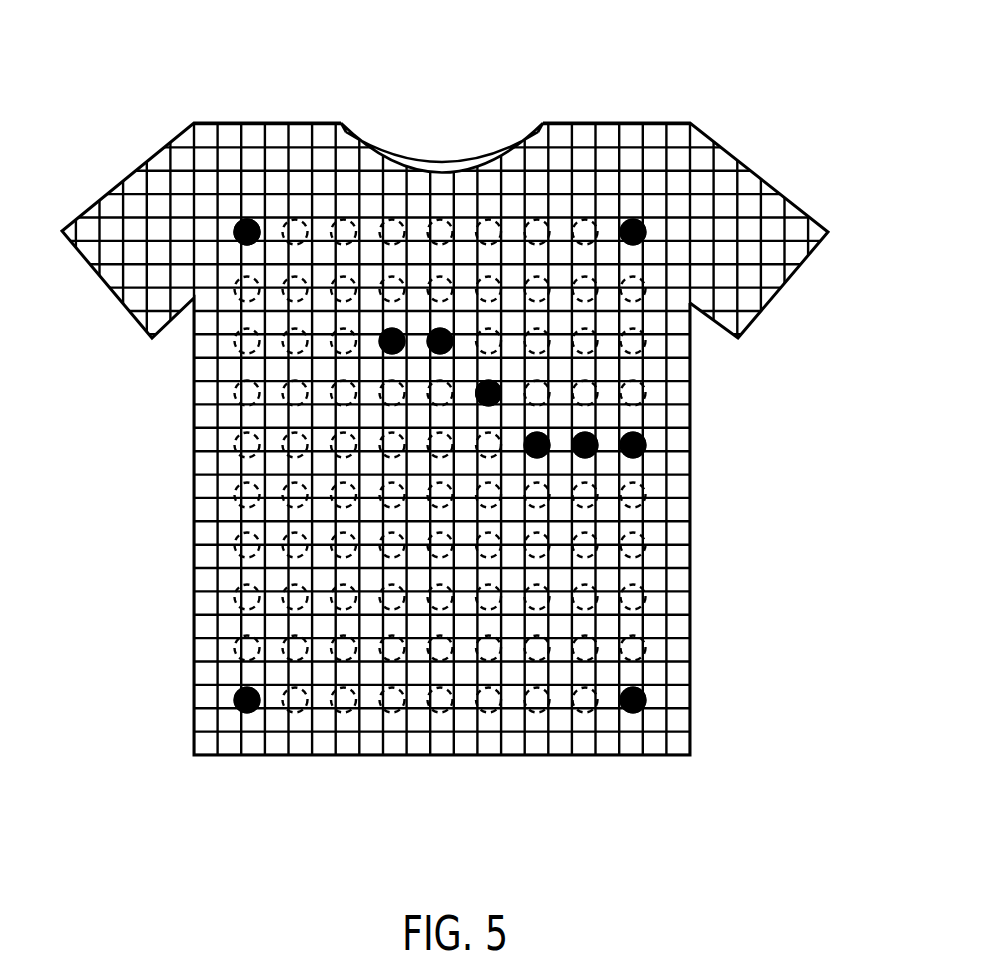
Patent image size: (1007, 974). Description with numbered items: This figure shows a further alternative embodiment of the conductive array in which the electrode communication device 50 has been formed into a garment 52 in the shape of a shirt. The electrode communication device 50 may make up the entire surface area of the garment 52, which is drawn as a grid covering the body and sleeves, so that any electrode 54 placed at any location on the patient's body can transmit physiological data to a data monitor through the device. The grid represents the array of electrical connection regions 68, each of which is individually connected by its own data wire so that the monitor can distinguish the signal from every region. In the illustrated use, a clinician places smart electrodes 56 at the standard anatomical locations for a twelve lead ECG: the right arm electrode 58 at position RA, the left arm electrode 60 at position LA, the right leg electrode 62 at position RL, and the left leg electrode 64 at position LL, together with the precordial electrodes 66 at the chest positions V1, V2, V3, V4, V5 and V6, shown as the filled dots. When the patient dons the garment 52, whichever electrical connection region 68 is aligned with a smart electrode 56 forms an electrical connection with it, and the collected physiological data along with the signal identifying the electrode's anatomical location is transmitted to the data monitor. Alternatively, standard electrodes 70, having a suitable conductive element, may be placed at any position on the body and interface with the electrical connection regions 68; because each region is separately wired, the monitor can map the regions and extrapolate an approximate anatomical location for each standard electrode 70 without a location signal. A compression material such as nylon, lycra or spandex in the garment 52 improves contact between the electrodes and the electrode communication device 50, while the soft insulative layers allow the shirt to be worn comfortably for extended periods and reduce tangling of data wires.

The electrode communication device 50 is at (464, 441).
The garment 52 is at (784, 165).
The electrode 54 is at (345, 222).
The smart electrode 56 is at (238, 238).
The right arm electrode 58 is at (233, 234).
The left arm electrode 60 is at (646, 230).
The right leg electrode 62 is at (242, 709).
The left leg electrode 64 is at (645, 712).
The precordial electrodes 66 is at (492, 382).
The electrical connection region 68 is at (746, 256).
The standard electrode 70 is at (650, 625).
The right arm electrode position RA is at (250, 220).
The left arm electrode position LA is at (633, 220).
The right leg electrode position RL is at (251, 710).
The left leg electrode position LL is at (633, 710).
The precordial electrode V1 is at (380, 355).
The precordial electrode V2 is at (432, 352).
The precordial electrode V3 is at (480, 405).
The precordial electrode V4 is at (534, 434).
The precordial electrode V5 is at (598, 434).
The precordial electrode V6 is at (648, 447).